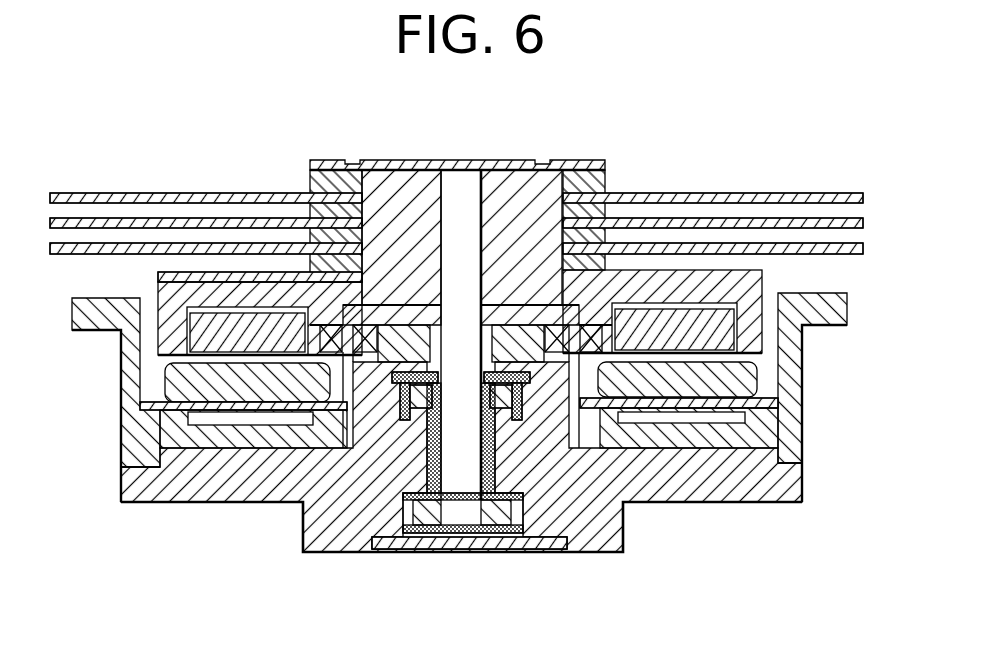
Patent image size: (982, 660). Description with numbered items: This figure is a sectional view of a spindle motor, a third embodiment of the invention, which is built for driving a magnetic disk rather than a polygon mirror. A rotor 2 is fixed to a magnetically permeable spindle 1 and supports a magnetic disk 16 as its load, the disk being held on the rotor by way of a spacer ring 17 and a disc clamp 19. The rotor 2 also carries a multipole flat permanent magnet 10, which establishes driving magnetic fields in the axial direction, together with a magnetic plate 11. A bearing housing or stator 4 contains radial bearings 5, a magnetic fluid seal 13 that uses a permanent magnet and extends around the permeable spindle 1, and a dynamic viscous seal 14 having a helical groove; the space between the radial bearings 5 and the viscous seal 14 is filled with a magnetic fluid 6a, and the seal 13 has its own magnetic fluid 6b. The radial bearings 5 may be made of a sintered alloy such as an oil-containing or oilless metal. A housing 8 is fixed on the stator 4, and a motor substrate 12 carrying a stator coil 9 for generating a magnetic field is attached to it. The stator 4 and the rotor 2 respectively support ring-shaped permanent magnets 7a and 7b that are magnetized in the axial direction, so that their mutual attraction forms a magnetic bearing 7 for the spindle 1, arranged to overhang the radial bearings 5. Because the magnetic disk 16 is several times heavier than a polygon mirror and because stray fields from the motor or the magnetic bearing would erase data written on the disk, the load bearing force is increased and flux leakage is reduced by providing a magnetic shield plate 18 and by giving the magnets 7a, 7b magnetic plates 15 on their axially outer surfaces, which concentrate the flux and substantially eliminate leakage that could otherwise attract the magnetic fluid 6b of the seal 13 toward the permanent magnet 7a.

The spindle 1 is at (462, 190).
The rotor 2 is at (157, 293).
The stator 4 is at (248, 493).
The radial bearings 5 is at (510, 357).
The magnetic fluid 6a is at (430, 450).
The magnetic fluid 6b is at (447, 332).
The magnetic bearing 7 is at (207, 490).
The permanent magnet 7a is at (597, 330).
The permanent magnet 7b is at (612, 300).
The housing 8 is at (137, 425).
The stator coil 9 is at (178, 373).
The permanent magnet 10 is at (730, 298).
The magnetic plate 11 is at (702, 293).
The motor substrate 12 is at (122, 488).
The magnetic fluid seal 13 is at (520, 325).
The dynamic viscous seal 14 is at (535, 335).
The magnetic plates 15 is at (512, 397).
The magnetic disk 16 is at (88, 196).
The spacer ring 17 is at (320, 190).
The magnetic shield plate 18 is at (200, 273).
The disc clamp 19 is at (330, 165).